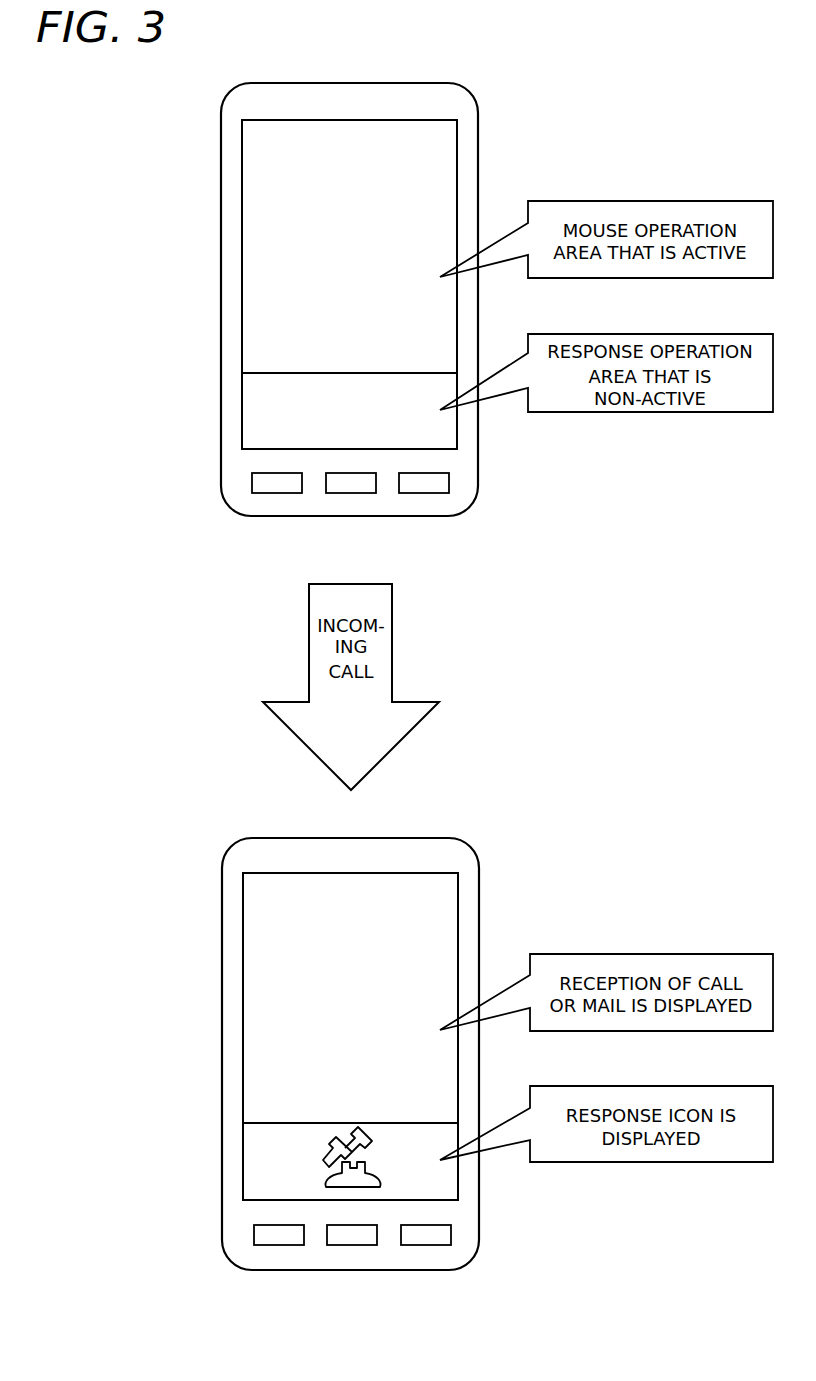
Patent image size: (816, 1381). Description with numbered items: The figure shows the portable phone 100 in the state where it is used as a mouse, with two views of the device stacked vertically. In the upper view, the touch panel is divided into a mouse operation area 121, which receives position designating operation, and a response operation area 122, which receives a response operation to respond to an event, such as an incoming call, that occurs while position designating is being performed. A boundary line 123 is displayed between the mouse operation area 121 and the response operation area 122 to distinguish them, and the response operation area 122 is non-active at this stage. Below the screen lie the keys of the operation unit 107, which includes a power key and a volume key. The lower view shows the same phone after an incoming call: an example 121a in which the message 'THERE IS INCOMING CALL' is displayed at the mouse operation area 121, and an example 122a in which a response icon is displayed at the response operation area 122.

The portable phone 100 is at (425, 83).
The mouse operation area 121 is at (262, 303).
The response operation area 122 is at (262, 417).
The boundary line 123 is at (283, 373).
The operation unit 107 is at (250, 493).
The example of message display at mouse operation area 121a is at (262, 1053).
The example of response icon display at response operation area 122a is at (262, 1167).